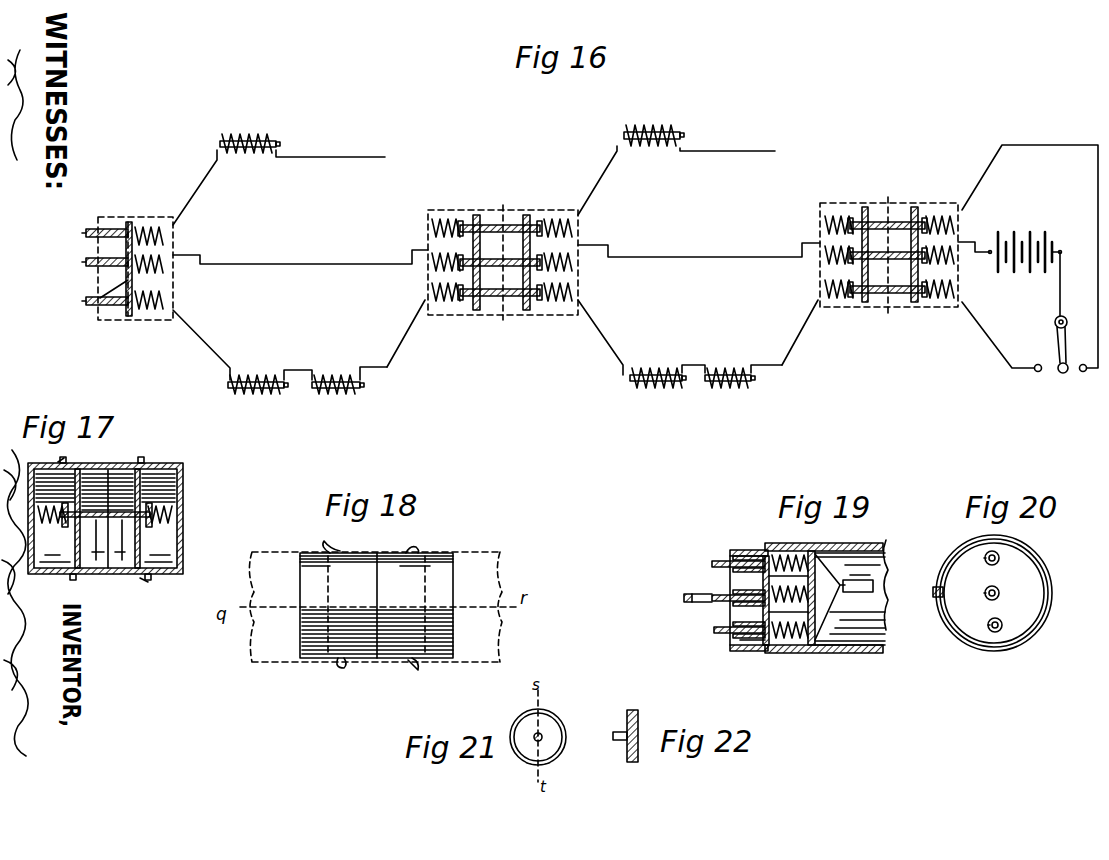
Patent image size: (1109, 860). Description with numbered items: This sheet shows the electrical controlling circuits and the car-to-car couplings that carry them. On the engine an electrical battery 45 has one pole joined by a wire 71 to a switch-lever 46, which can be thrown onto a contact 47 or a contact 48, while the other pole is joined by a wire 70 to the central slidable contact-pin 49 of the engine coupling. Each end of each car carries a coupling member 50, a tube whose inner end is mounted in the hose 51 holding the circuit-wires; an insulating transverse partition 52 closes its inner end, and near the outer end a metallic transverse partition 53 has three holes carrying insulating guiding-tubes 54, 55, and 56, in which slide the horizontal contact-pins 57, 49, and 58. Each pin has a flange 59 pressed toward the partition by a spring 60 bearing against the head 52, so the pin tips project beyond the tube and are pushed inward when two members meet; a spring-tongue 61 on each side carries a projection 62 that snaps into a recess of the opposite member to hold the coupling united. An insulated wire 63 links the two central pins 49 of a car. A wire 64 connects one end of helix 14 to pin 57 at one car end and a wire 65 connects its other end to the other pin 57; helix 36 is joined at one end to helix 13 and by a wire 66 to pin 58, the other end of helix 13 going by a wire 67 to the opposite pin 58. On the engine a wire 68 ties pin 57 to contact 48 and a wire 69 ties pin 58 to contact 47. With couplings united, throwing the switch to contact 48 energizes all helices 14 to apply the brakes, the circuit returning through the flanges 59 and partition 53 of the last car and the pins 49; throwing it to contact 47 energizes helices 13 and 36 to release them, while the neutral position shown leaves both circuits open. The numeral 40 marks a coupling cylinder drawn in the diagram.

In FIG. 16, the helix 13 is at (661, 370).
In FIG. 16, the helix 14 is at (649, 152).
In FIG. 16, the helix 36 is at (734, 370).
In FIG. 16, the coupling cylinder 40 is at (504, 260).
In FIG. 16, the electrical battery 45 is at (1028, 227).
In FIG. 16, the switch-lever 46 is at (1056, 337).
In FIG. 16, the contact 47 is at (1037, 374).
In FIG. 16, the contact 48 is at (1084, 372).
In FIG. 16, the central slidable contact-pin 49 is at (915, 298).
In FIG. 17, the central slidable contact-pin 49 is at (139, 574).
In FIG. 19, the central slidable contact-pin 49 is at (712, 598).
In FIG. 20, the central slidable contact-pin 49 is at (1000, 597).
In FIG. 17, the coupling member 50 is at (170, 575).
In FIG. 18, the coupling member 50 is at (376, 605).
In FIG. 19, the coupling member 50 is at (771, 653).
In FIG. 20, the coupling member 50 is at (1052, 576).
In FIG. 19, the hose 51 is at (844, 597).
In FIG. 19, the transverse partition 52 is at (819, 640).
In FIG. 16, the transverse partition 53 is at (100, 302).
In FIG. 19, the transverse partition 53 is at (730, 612).
In FIG. 19, the insulating guiding-tube 54 is at (735, 553).
In FIG. 19, the insulating guiding-tube 55 is at (732, 586).
In FIG. 19, the insulating guiding-tube 56 is at (736, 642).
In FIG. 16, the sliding contact-pin 57 is at (939, 206).
In FIG. 19, the sliding contact-pin 57 is at (710, 561).
In FIG. 20, the sliding contact-pin 57 is at (1000, 564).
In FIG. 16, the sliding contact-pin 58 is at (900, 305).
In FIG. 19, the sliding contact-pin 58 is at (712, 632).
In FIG. 20, the sliding contact-pin 58 is at (1002, 622).
In FIG. 16, the flange 59 is at (127, 314).
In FIG. 17, the flange 59 is at (157, 520).
In FIG. 19, the flange 59 is at (895, 653).
In FIG. 20, the flange 59 is at (987, 620).
In FIG. 16, the spring 60 is at (170, 278).
In FIG. 17, the spring 60 is at (64, 524).
In FIG. 19, the spring 60 is at (815, 648).
In FIG. 17, the spring-tongue 61 is at (112, 574).
In FIG. 18, the spring-tongue 61 is at (378, 664).
In FIG. 19, the spring-tongue 61 is at (684, 596).
In FIG. 20, the spring-tongue 61 is at (944, 592).
In FIG. 17, the projection 62 is at (144, 580).
In FIG. 16, the insulated wire 63 is at (696, 268).
In FIG. 16, the wire 64 is at (718, 156).
In FIG. 16, the wire 65 is at (606, 172).
In FIG. 16, the wire 66 is at (803, 344).
In FIG. 16, the wire 67 is at (600, 343).
In FIG. 16, the wire 68 is at (1030, 241).
In FIG. 16, the wire 69 is at (983, 334).
In FIG. 16, the wire 70 is at (960, 242).
In FIG. 16, the wire 71 is at (1071, 284).